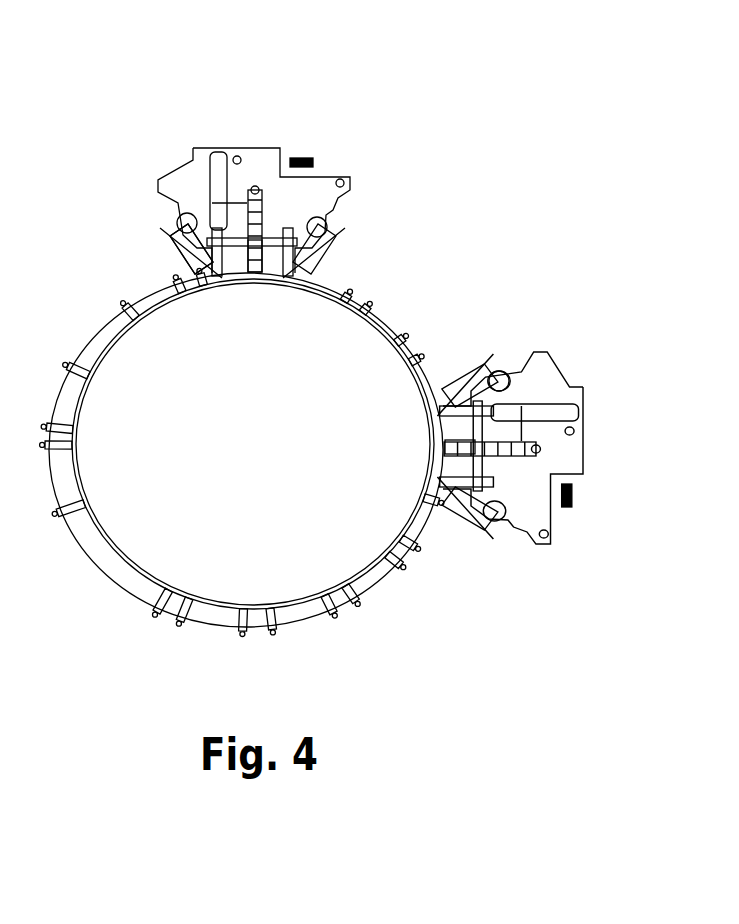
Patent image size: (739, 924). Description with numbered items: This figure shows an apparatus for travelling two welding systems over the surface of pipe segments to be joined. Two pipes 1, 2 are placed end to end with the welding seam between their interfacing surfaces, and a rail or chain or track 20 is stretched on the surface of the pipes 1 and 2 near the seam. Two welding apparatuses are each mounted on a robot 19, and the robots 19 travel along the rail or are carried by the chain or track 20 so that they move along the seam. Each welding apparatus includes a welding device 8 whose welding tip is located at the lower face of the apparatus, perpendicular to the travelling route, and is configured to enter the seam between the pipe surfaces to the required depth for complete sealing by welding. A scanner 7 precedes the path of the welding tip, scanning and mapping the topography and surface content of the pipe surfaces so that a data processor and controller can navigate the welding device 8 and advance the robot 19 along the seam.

The pipe 1 is at (242, 452).
The pipe 2 is at (390, 548).
The scanner 7 is at (163, 237).
The welding device 8 is at (250, 270).
The robot 19 is at (265, 140).
The rail or chain or track 20 is at (417, 322).